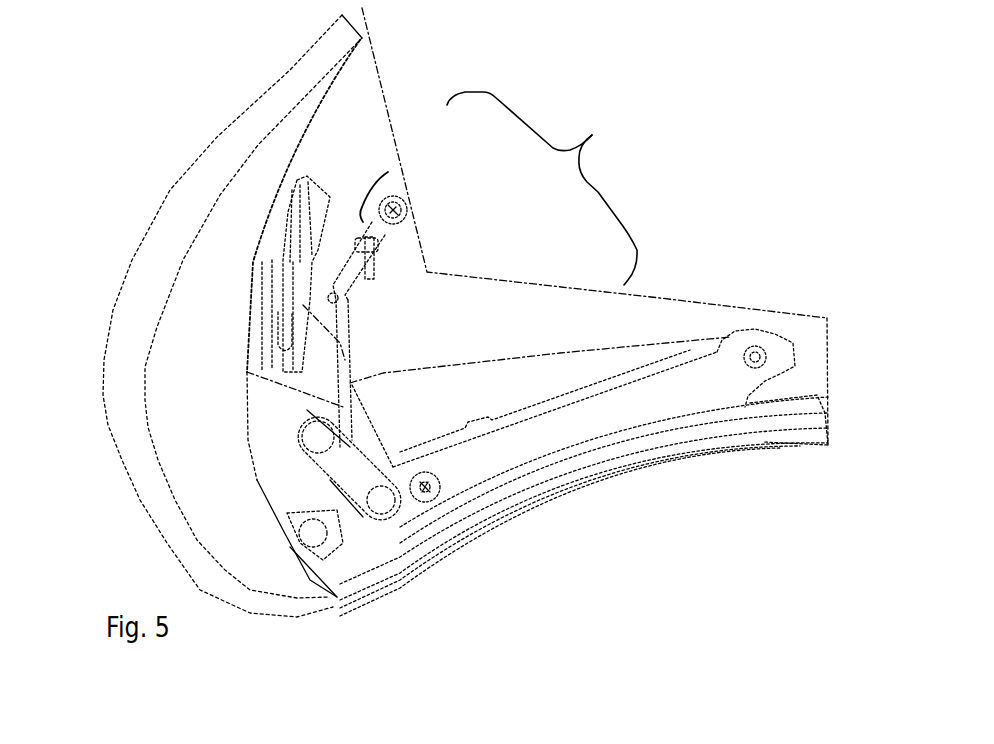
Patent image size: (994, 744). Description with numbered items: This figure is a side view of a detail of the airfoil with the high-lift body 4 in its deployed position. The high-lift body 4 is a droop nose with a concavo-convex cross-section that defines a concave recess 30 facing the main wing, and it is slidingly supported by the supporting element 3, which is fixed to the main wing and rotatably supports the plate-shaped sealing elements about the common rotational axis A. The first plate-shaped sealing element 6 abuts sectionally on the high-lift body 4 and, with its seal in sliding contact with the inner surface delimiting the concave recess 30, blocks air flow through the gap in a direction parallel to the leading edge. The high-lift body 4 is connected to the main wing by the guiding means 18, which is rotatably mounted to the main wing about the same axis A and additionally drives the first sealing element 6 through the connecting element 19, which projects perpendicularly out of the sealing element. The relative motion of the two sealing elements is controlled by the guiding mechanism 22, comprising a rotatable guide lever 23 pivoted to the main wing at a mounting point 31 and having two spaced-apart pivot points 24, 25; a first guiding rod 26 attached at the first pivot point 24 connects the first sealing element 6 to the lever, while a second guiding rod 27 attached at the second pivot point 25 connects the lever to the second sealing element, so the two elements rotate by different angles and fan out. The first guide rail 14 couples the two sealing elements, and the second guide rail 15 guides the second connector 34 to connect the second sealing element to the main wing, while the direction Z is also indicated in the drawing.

The supporting element 3 is at (755, 357).
The high-lift body 4 is at (215, 135).
The first plate-shaped sealing element 6 is at (673, 427).
The first guide rail 14 is at (285, 330).
The second guide rail 15 is at (318, 183).
The guiding means 18 is at (692, 385).
The connecting element 19 is at (432, 497).
The guiding mechanism 22 is at (543, 188).
The rotatable guide lever 23 is at (388, 172).
The first pivot point 24 is at (330, 308).
The second pivot point 25 is at (365, 245).
The first guiding rod 26 is at (350, 383).
The second guiding rod 27 is at (348, 296).
The concave recess 30 is at (190, 421).
The mounting point 31 is at (382, 214).
The second connector 34 is at (280, 193).
The direction Z is at (540, 396).